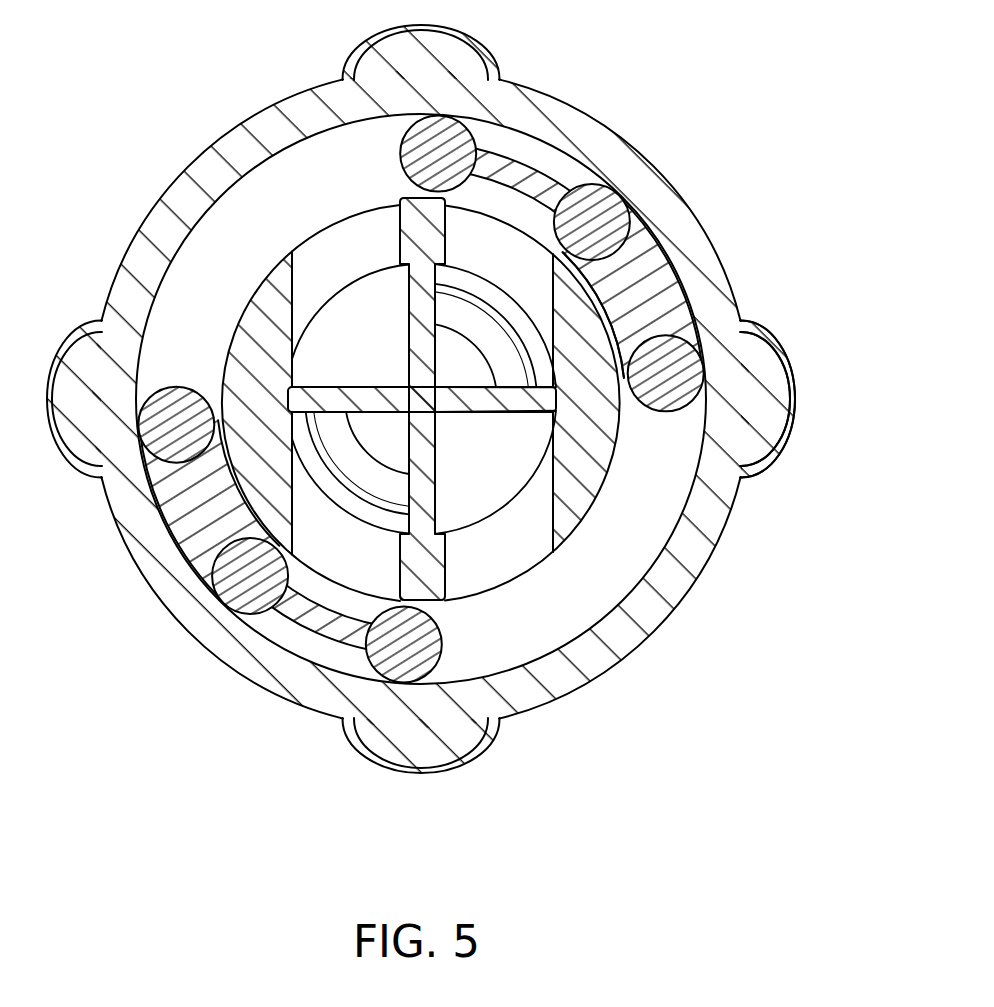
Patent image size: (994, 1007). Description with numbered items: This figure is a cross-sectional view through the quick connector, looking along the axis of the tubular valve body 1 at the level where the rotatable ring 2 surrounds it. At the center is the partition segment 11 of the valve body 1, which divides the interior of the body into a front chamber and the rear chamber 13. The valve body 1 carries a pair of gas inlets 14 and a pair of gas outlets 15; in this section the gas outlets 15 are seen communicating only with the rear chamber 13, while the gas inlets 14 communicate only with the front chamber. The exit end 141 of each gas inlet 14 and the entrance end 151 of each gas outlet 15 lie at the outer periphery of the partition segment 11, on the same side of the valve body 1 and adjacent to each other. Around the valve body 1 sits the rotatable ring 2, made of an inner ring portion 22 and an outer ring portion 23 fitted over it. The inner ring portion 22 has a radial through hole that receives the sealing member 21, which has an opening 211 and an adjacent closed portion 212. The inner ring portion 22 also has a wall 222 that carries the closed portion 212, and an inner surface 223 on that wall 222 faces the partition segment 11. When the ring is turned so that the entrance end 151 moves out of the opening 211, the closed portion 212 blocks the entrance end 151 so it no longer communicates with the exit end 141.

The valve body 1 is at (475, 440).
The partition segment 11 is at (560, 540).
The rear chamber 13 is at (508, 303).
The gas inlet 14 is at (407, 308).
The gas outlet 15 is at (435, 318).
The exit end 141 is at (314, 208).
The entrance end 151 is at (503, 219).
The rotatable ring 2 is at (451, 390).
The sealing member 21 is at (421, 390).
The opening 211 is at (207, 232).
The closed portion 212 is at (497, 166).
The inner ring portion 22 is at (791, 378).
The wall 222 is at (727, 388).
The inner surface 223 is at (623, 423).
The outer ring portion 23 is at (697, 245).